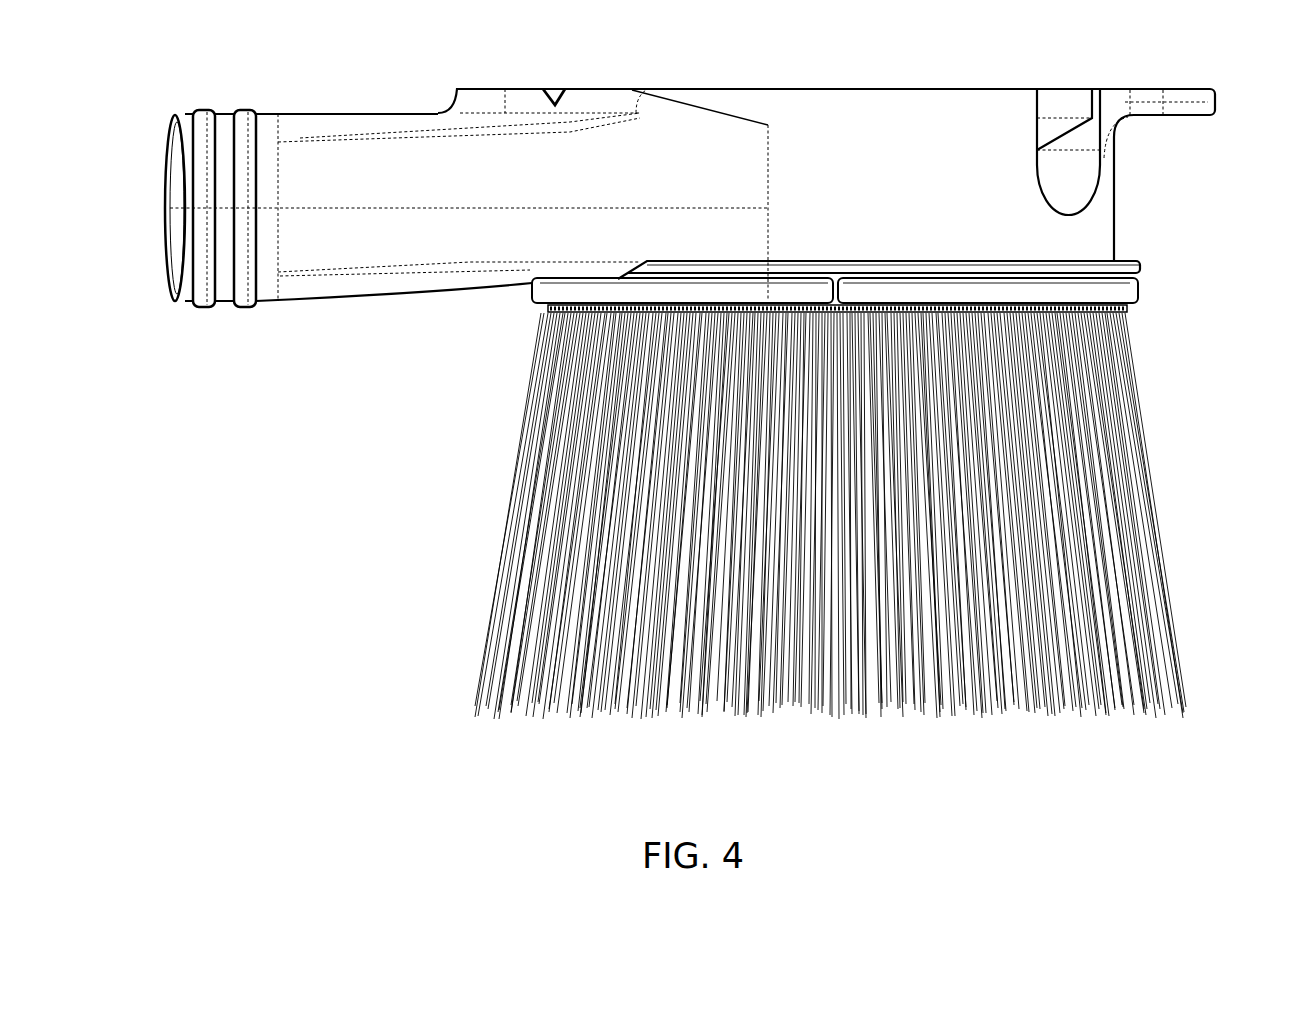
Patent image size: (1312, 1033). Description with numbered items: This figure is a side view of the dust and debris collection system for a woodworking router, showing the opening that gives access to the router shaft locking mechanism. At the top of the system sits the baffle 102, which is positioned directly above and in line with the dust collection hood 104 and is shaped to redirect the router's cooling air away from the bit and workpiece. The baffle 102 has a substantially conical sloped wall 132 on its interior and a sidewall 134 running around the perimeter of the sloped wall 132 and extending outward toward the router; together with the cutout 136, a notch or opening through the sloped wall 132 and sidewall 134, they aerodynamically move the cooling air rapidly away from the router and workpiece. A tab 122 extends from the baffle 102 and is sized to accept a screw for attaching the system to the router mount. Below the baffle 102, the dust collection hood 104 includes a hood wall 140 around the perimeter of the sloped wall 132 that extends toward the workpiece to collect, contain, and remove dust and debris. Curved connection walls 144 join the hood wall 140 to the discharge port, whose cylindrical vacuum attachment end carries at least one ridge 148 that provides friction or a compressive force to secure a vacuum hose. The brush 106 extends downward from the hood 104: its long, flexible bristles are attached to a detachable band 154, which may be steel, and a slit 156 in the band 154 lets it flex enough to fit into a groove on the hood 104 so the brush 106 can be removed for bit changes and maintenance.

The baffle 102 is at (965, 86).
The dust collection hood 104 is at (1130, 210).
The brush 106 is at (504, 491).
The tab 122 is at (1206, 95).
The sloped wall 132 is at (1084, 168).
The sidewall 134 is at (1083, 100).
The cutout 136 is at (1061, 101).
The hood wall 140 is at (1106, 240).
The curved connection walls 144 is at (430, 160).
The ridge 148 is at (245, 108).
The detachable band 154 is at (1135, 290).
The slit 156 is at (836, 276).